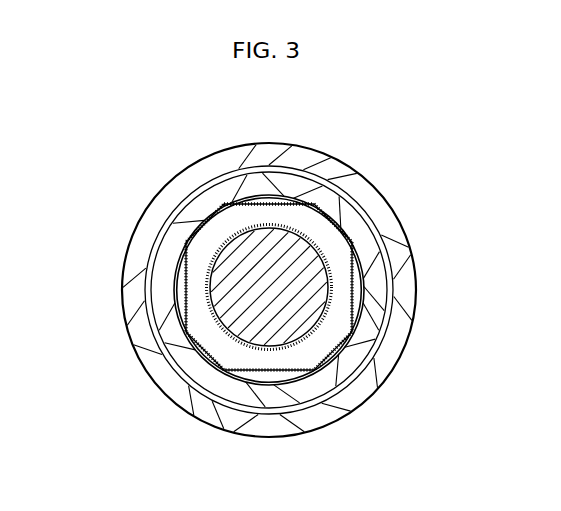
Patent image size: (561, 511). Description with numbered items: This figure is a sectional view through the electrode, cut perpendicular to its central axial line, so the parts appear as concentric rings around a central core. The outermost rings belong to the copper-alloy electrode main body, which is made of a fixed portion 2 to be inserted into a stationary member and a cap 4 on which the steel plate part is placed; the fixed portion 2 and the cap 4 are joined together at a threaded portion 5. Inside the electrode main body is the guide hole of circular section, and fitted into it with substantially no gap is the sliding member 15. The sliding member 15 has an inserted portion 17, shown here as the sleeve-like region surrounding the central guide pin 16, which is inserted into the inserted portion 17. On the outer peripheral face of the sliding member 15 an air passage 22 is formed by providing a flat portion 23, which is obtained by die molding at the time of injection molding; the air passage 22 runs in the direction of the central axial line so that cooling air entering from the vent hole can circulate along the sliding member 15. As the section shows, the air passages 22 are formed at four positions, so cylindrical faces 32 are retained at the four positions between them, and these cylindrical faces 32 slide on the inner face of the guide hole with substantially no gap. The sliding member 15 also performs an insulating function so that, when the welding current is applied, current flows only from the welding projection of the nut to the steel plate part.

The fixed portion 2 is at (380, 369).
The cap 4 is at (366, 166).
The threaded portion 5 is at (394, 332).
The sliding member 15 is at (175, 353).
The guide pin 16 is at (248, 350).
The inserted portion 17 is at (312, 225).
The air passage 22 is at (258, 193).
The flat portion 23 is at (287, 195).
The cylindrical face 32 is at (190, 193).